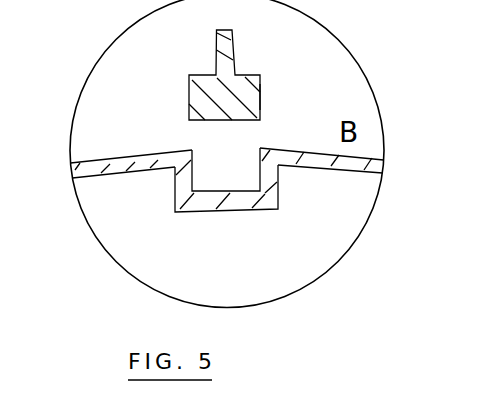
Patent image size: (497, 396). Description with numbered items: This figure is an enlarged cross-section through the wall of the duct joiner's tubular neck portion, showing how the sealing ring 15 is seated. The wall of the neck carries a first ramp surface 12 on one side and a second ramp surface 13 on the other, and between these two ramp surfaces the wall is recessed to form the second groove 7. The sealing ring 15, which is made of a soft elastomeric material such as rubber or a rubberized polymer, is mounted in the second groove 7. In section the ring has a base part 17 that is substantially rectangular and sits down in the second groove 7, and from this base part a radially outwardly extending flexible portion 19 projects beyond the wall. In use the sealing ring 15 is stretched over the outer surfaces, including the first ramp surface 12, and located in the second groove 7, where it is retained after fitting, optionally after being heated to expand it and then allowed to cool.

The second groove 7 is at (205, 187).
The first ramp surface 12 is at (308, 152).
The second ramp surface 13 is at (122, 160).
The sealing ring 15 is at (180, 74).
The base part 17 is at (260, 97).
The flexible portion 19 is at (233, 52).